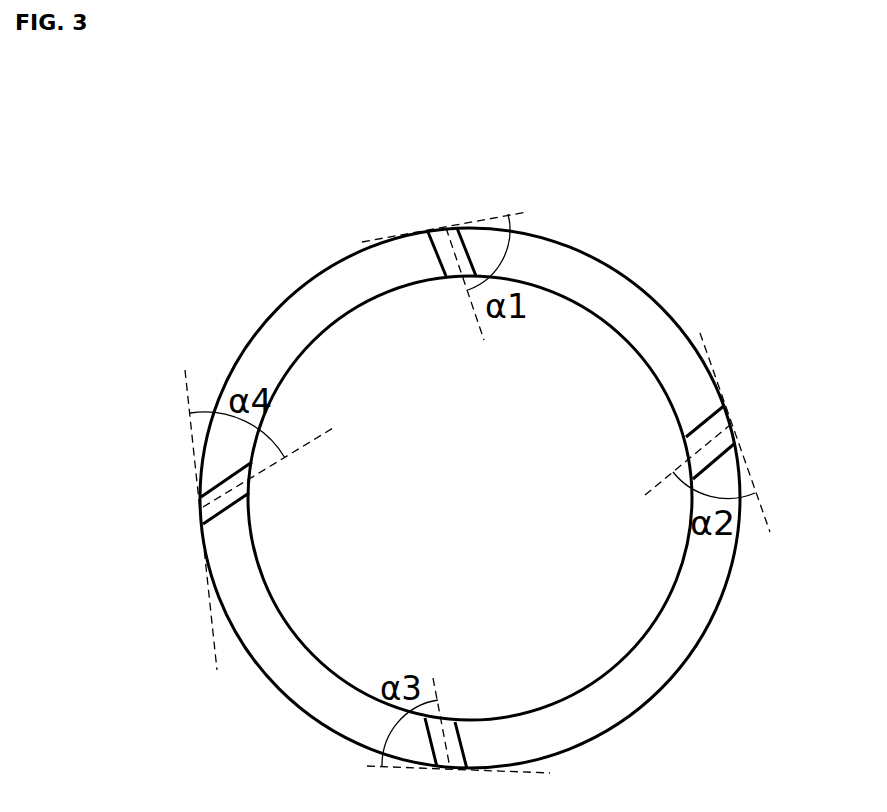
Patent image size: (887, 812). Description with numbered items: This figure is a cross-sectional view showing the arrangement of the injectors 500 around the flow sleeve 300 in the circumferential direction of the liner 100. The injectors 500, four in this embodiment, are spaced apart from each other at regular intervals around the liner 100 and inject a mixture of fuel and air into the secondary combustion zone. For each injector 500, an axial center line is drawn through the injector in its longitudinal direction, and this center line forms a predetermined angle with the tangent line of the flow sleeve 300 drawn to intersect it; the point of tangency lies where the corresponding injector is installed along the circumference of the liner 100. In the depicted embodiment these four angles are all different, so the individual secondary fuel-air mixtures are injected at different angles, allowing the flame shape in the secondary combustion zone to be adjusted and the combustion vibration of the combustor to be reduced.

The liner 100 is at (608, 322).
The flow sleeve 300 is at (640, 712).
The injector 500 is at (438, 254).